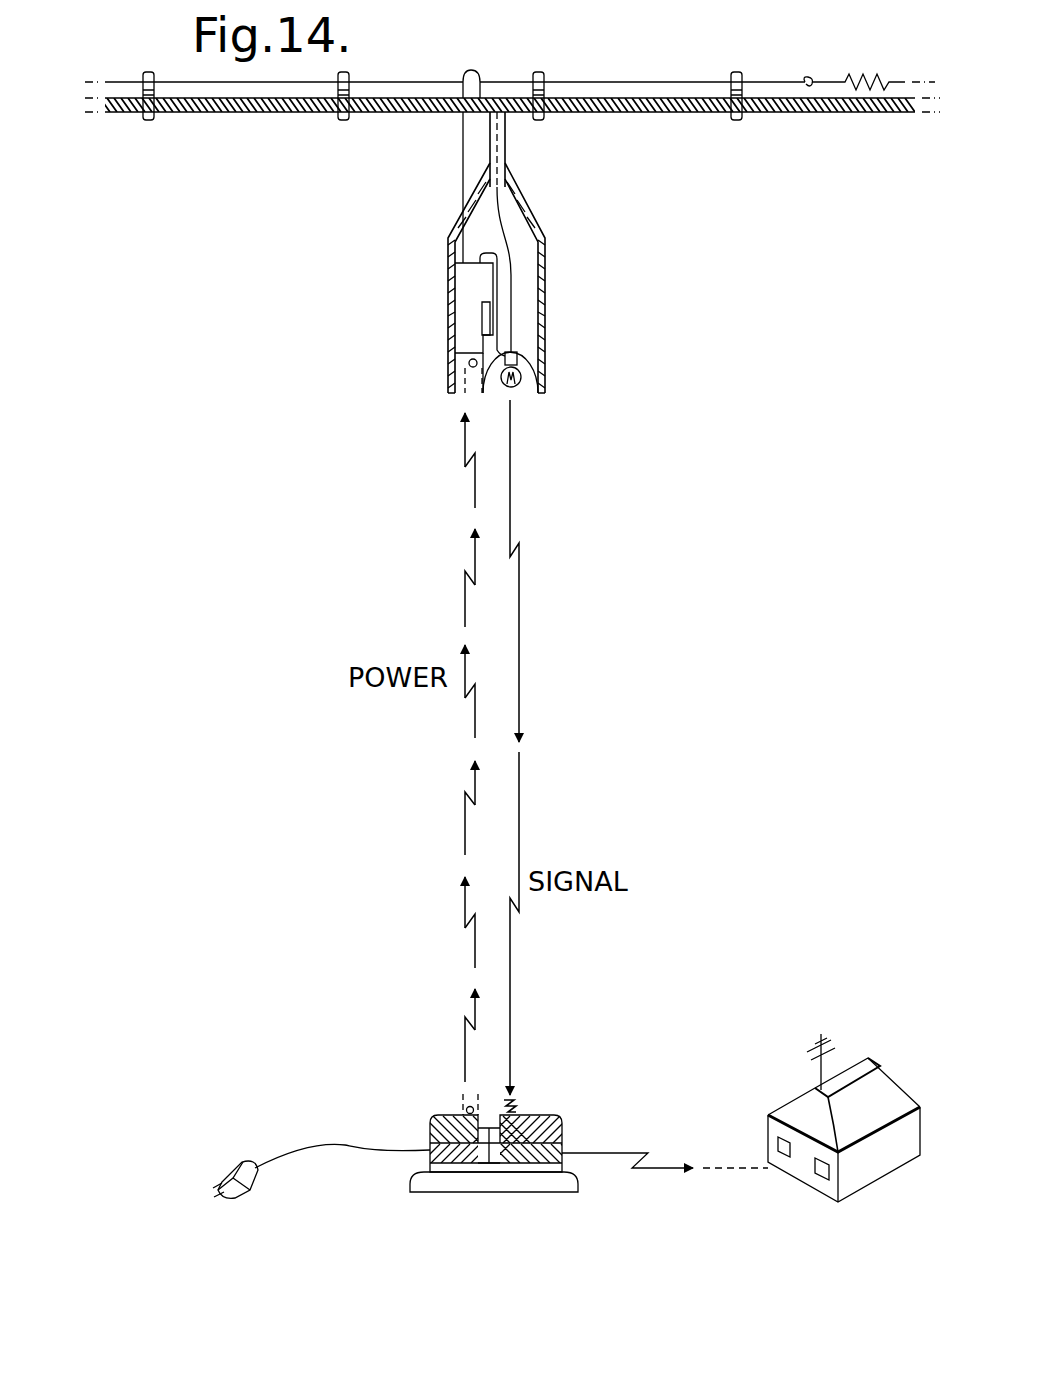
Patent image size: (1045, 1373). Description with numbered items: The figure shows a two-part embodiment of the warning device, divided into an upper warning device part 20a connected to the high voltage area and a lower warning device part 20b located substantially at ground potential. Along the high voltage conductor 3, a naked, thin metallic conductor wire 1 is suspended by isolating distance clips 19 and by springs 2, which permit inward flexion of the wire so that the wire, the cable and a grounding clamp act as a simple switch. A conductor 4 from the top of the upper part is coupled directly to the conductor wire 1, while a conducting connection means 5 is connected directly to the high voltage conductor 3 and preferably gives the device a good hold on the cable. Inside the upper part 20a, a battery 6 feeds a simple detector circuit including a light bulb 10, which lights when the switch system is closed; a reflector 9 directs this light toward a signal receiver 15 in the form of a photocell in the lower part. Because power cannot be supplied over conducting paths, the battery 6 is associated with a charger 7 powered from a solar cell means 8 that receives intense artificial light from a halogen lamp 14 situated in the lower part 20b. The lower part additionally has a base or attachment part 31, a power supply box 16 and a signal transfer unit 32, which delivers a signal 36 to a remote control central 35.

The conductor wire 1 is at (660, 82).
The springs 2 is at (860, 80).
The high voltage conductor 3 is at (205, 112).
The conductor 4 is at (462, 128).
The conducting connection means 5 is at (505, 126).
The battery 6 is at (466, 290).
The charger 7 is at (483, 313).
The solar cell means 8 is at (466, 363).
The reflector 9 is at (540, 358).
The light bulb 10 is at (546, 388).
The halogen lamp 14 is at (437, 1125).
The signal receiver 15 is at (565, 1127).
The power supply box 16 is at (445, 1150).
The isolating distance clips 19 is at (744, 96).
The warning device part 20a is at (620, 272).
The warning device part 20b is at (421, 1184).
The base or attachment part 31 is at (556, 1186).
The signal transfer unit 32 is at (535, 1157).
The remote control central 35 is at (870, 1164).
The signal 36 is at (648, 1153).